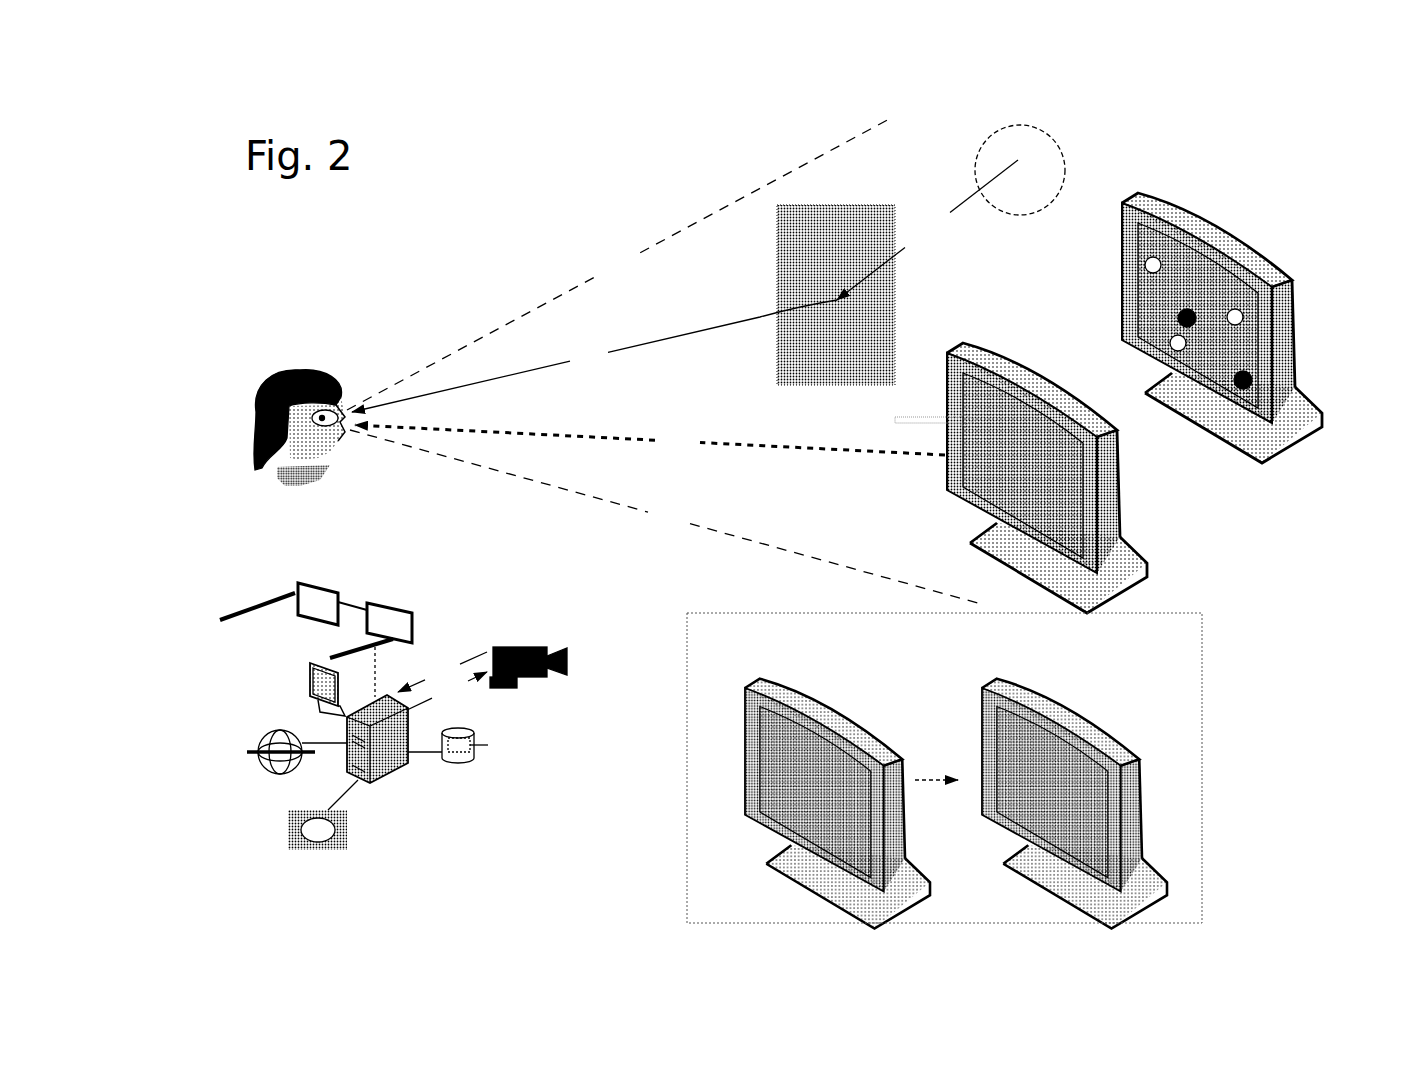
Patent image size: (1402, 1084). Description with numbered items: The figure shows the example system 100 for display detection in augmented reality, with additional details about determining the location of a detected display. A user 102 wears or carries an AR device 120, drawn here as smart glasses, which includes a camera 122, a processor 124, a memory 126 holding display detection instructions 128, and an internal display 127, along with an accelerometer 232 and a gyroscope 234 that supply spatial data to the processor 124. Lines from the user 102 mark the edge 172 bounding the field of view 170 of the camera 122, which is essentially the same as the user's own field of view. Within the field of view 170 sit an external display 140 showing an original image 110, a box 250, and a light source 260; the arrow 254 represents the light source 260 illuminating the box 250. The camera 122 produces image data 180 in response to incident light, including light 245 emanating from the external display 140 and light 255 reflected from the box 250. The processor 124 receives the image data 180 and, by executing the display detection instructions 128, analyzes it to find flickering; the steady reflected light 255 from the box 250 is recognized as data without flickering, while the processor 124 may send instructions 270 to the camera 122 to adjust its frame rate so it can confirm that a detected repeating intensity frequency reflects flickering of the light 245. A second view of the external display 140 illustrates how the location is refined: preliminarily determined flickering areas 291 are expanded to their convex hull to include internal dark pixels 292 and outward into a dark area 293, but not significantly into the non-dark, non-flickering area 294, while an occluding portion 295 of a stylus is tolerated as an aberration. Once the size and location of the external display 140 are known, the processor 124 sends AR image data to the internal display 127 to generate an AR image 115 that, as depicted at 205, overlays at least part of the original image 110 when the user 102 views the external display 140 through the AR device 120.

The system 100 is at (280, 269).
The user 102 is at (298, 481).
The original image 110 is at (992, 482).
The AR image 115 is at (1027, 813).
The AR device 120 is at (341, 432).
The camera 122 is at (548, 673).
The processor 124 is at (390, 777).
The memory 126 is at (456, 762).
The internal display 127 is at (310, 673).
The display detection instructions 128 is at (567, 768).
The external display 140 is at (1050, 405).
The field of view 170 is at (520, 333).
The edge 172 is at (666, 361).
The image data 180 is at (442, 672).
The overlay depiction 205 is at (944, 768).
The accelerometer 232 is at (318, 852).
The gyroscope 234 is at (265, 768).
The light 245 is at (650, 440).
The box 250 is at (848, 250).
The arrow 254 is at (927, 230).
The light 255 is at (594, 356).
The light source 260 is at (1020, 170).
The instructions 270 is at (447, 691).
The flickering areas 291 is at (1172, 339).
The internal dark pixels 292 is at (1196, 321).
The dark area 293 is at (1252, 383).
The non-dark, non-flickering area 294 is at (1130, 233).
The portion of stylus 295 is at (968, 414).